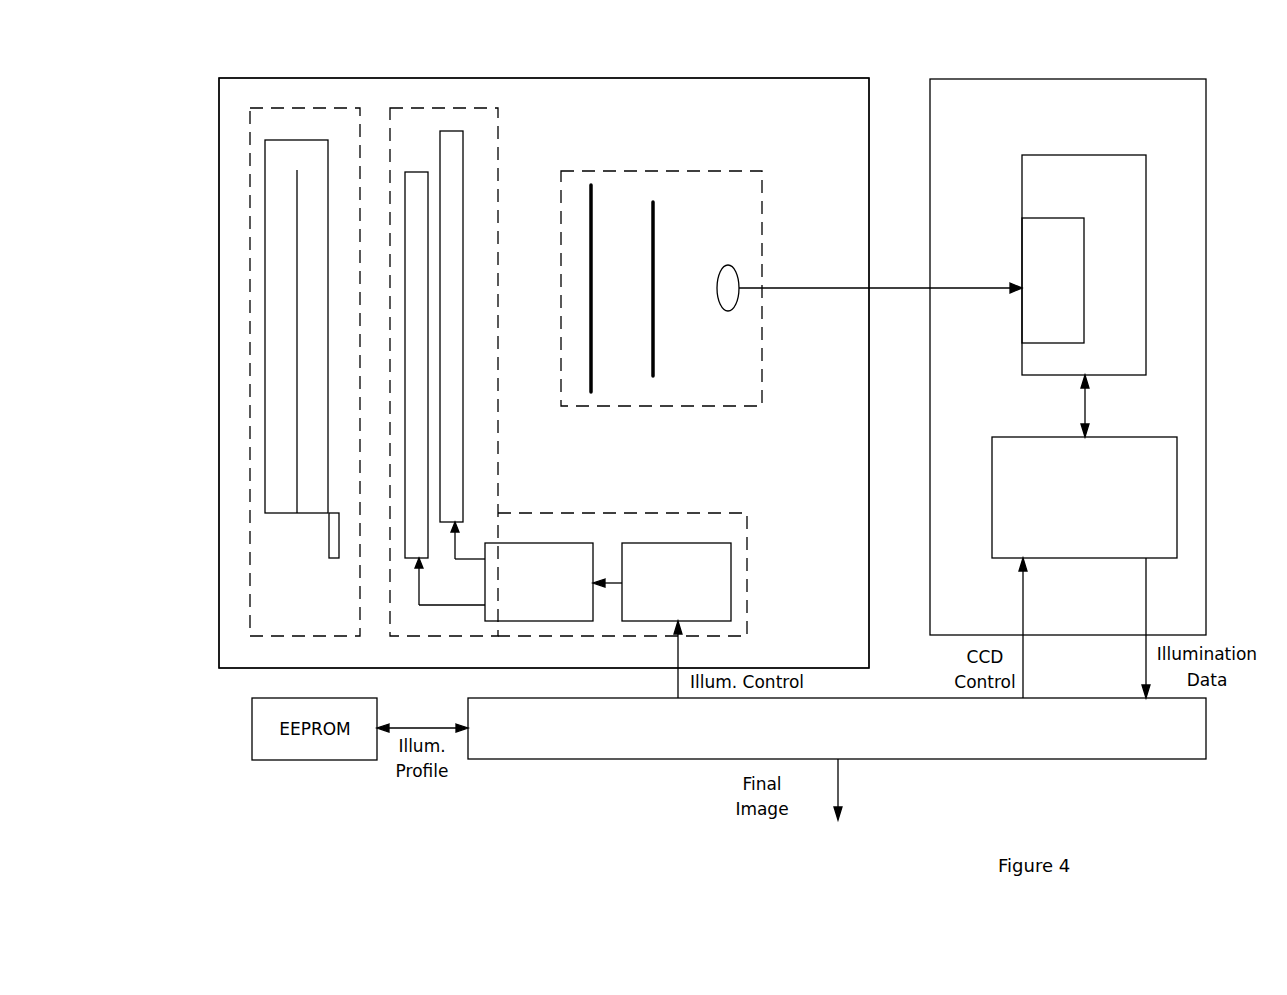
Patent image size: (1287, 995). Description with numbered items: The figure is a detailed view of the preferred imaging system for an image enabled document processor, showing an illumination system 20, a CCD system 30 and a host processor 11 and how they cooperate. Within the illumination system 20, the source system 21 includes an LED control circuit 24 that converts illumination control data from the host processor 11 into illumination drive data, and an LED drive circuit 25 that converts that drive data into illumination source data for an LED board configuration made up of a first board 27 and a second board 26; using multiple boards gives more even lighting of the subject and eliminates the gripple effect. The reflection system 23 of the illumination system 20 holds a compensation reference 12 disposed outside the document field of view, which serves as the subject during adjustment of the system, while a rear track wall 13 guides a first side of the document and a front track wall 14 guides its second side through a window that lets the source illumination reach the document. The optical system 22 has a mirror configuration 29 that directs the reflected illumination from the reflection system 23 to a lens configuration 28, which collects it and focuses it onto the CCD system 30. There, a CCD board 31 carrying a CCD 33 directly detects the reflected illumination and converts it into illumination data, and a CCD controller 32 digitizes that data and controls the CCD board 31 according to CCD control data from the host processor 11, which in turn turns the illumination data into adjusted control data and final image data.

The host processor 11 is at (937, 760).
The compensation reference 12 is at (330, 545).
The rear track wall 13 is at (265, 421).
The front track wall 14 is at (328, 148).
The illumination system 20 is at (312, 78).
The source system 21 is at (498, 108).
The optical system 22 is at (700, 171).
The reflection system 23 is at (250, 249).
The LED control circuit 24 is at (640, 621).
The LED drive circuit 25 is at (502, 621).
The second board 26 is at (407, 558).
The first board 27 is at (433, 155).
The lens configuration 28 is at (728, 265).
The mirror configuration 29 is at (568, 197).
The CCD system 30 is at (1006, 78).
The CCD board 31 is at (1146, 218).
The CCD controller 32 is at (1177, 528).
The CCD 33 is at (1084, 328).